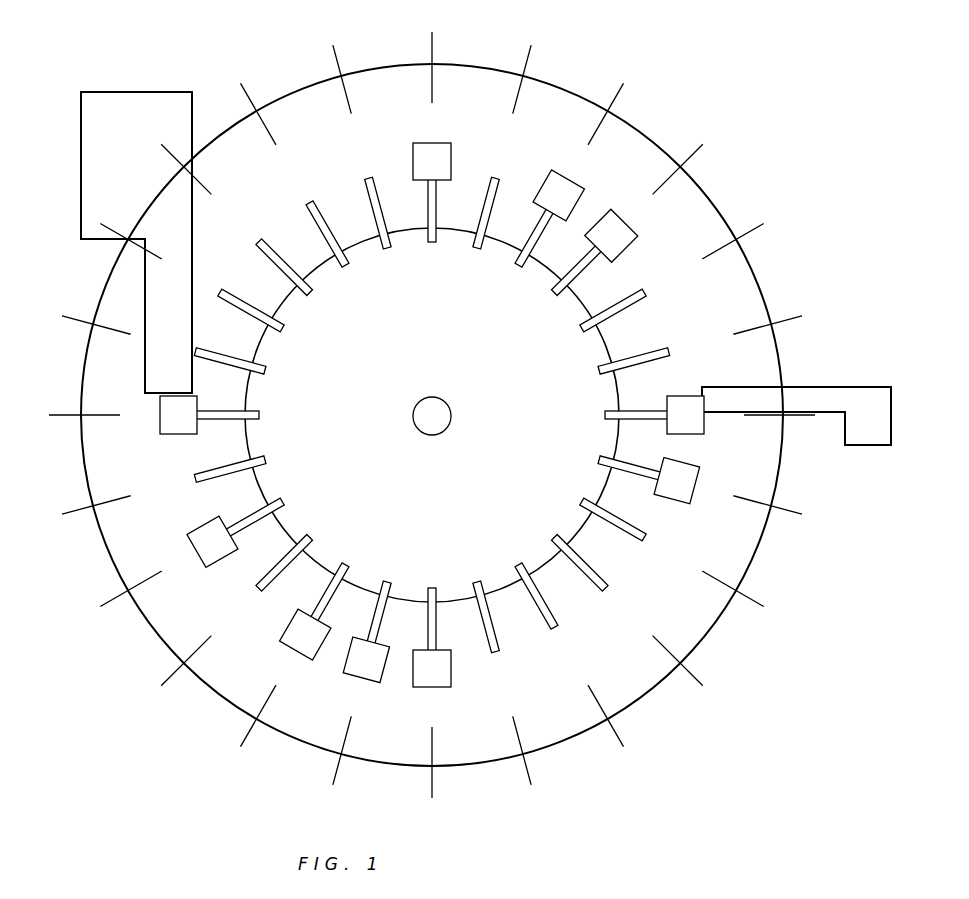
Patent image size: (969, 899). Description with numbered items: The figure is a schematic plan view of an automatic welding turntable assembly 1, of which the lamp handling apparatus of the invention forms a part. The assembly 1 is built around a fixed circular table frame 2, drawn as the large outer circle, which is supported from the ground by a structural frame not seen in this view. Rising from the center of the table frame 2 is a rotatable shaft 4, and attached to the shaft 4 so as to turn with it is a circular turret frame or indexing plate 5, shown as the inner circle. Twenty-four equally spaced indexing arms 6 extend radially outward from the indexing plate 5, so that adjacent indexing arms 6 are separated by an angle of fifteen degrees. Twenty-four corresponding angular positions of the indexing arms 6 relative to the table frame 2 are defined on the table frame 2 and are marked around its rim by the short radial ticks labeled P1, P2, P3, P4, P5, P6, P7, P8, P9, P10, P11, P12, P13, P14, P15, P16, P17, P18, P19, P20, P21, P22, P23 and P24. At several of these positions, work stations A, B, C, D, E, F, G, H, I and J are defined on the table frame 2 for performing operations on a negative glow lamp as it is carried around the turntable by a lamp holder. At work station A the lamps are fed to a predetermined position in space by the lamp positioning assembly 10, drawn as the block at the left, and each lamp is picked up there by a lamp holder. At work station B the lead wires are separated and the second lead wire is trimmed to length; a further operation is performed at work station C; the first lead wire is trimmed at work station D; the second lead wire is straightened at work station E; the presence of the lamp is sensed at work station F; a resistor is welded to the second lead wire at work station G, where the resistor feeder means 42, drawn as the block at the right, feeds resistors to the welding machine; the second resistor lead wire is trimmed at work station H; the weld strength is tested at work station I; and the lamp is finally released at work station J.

The automatic welding turntable assembly 1 is at (680, 90).
The table frame 2 is at (737, 268).
The rotatable shaft 4 is at (438, 433).
The indexing plate 5 is at (507, 364).
The indexing arms 6 is at (296, 272).
The lamp positioning assembly 10 is at (143, 92).
The resistor feeder means 42 is at (855, 387).
The work station A is at (168, 430).
The work station B is at (205, 530).
The work station C is at (292, 645).
The work station D is at (358, 675).
The work station E is at (440, 688).
The work station F is at (688, 470).
The work station G is at (685, 400).
The work station H is at (628, 228).
The work station I is at (565, 178).
The work station J is at (440, 143).
The angular position P1 is at (60, 415).
The angular position P2 is at (73, 511).
The angular position P3 is at (110, 601).
The angular position P4 is at (169, 678).
The angular position P5 is at (246, 737).
The angular position P6 is at (336, 774).
The angular position P7 is at (432, 787).
The angular position P8 is at (528, 774).
The angular position P9 is at (618, 737).
The angular position P10 is at (695, 678).
The angular position P11 is at (754, 601).
The angular position P12 is at (791, 511).
The angular position P13 is at (804, 417).
The angular position P14 is at (791, 319).
The angular position P15 is at (754, 229).
The angular position P16 is at (695, 152).
The angular position P17 is at (618, 93).
The angular position P18 is at (528, 56).
The angular position P19 is at (432, 43).
The angular position P20 is at (336, 56).
The angular position P21 is at (246, 93).
The angular position P22 is at (175, 136).
The angular position P23 is at (110, 229).
The angular position P24 is at (73, 319).